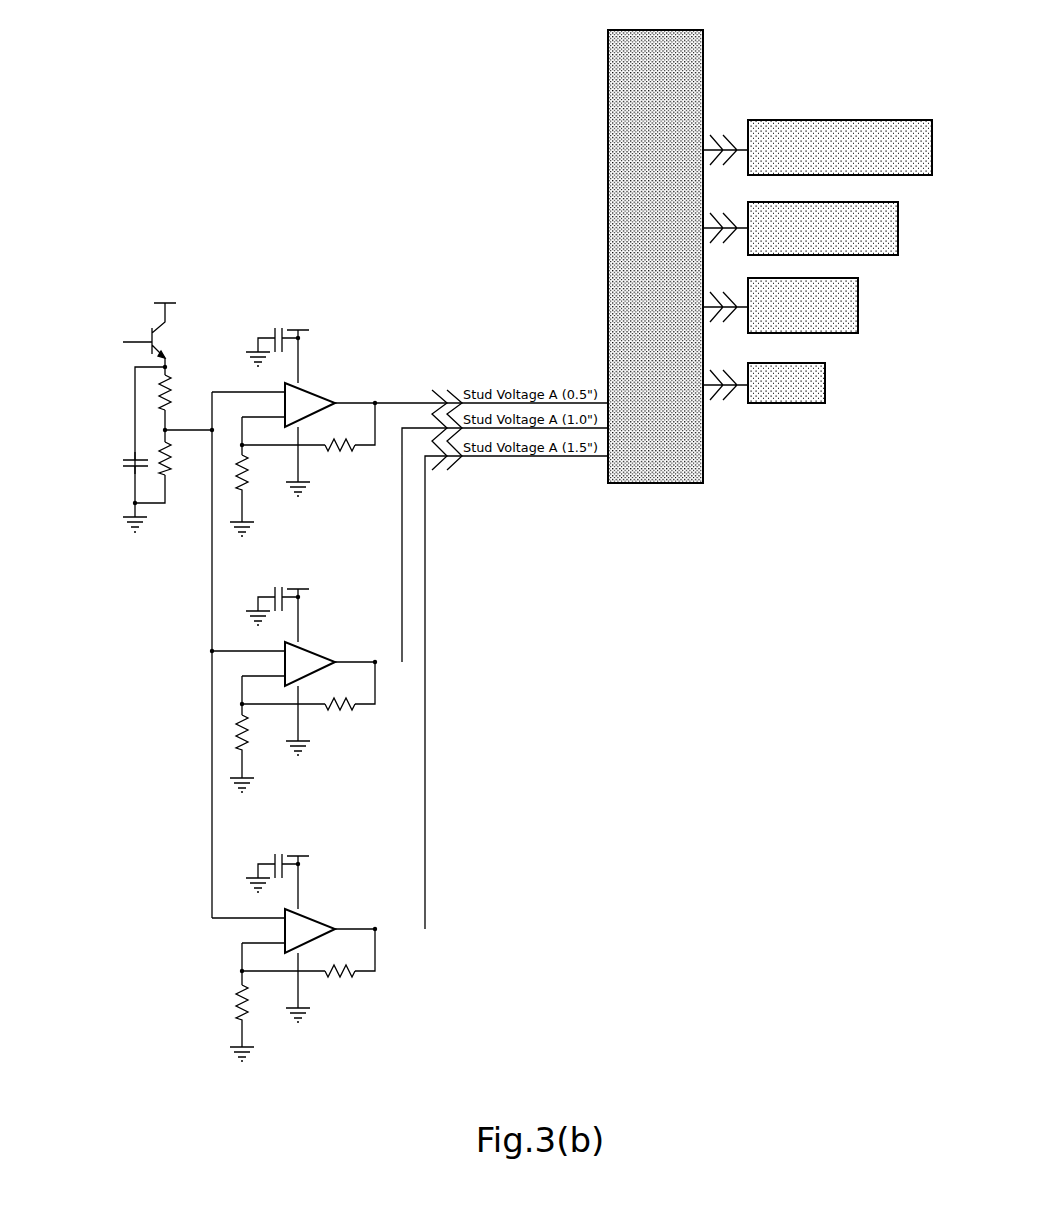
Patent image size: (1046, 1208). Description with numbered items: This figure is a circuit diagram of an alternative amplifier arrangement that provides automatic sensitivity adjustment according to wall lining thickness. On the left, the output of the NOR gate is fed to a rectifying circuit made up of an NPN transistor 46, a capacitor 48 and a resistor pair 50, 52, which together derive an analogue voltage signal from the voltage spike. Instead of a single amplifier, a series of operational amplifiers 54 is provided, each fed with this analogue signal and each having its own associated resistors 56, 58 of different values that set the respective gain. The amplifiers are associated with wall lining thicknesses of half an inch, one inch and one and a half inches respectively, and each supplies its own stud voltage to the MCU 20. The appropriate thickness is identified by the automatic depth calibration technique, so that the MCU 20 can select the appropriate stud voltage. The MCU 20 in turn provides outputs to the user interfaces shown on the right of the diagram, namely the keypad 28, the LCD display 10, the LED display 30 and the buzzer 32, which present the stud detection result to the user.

The LCD display 10 is at (898, 229).
The MCU 20 is at (680, 483).
The keypad 28 is at (910, 120).
The LED display 30 is at (858, 305).
The buzzer 32 is at (825, 385).
The NPN transistor 46 is at (172, 322).
The capacitor 48 is at (122, 468).
The resistor 50 is at (170, 377).
The resistor 52 is at (177, 478).
The operational amplifier 54 is at (312, 384).
The resistor 56 is at (352, 446).
The resistor 58 is at (195, 1012).